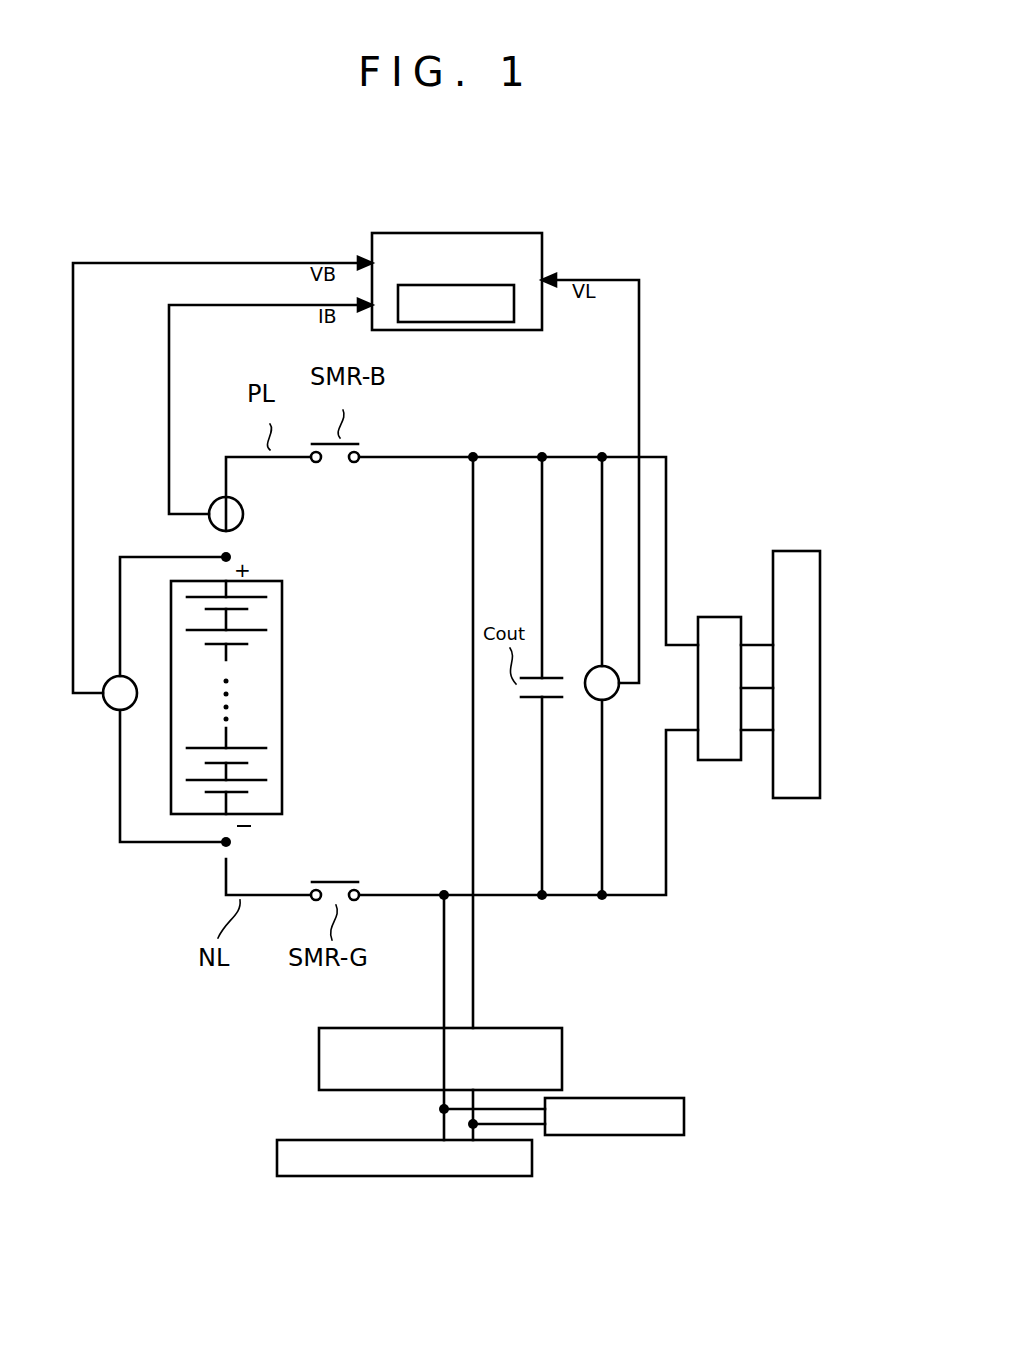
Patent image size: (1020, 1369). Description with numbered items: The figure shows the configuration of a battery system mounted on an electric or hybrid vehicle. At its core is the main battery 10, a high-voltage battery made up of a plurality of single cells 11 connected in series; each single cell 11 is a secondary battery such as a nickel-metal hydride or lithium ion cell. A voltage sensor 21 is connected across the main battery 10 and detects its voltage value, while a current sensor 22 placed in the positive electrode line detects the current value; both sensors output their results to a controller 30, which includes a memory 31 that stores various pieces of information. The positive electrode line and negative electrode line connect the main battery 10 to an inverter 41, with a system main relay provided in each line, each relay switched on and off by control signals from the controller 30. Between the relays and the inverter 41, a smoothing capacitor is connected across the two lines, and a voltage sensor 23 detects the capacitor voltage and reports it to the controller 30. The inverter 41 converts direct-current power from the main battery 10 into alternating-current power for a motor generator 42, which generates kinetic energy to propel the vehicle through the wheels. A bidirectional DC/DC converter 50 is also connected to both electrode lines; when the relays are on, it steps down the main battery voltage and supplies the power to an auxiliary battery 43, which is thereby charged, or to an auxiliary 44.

The main battery 10 is at (284, 690).
The single cell 11 is at (258, 603).
The voltage sensor 21 is at (107, 706).
The current sensor 22 is at (243, 514).
The voltage sensor 23 is at (613, 697).
The controller 30 is at (500, 307).
The memory 31 is at (457, 322).
The inverter 41 is at (722, 760).
The motor generator 42 is at (800, 798).
The auxiliary battery 43 is at (532, 1158).
The auxiliary 44 is at (684, 1117).
The bidirectional DC/DC converter 50 is at (562, 1058).